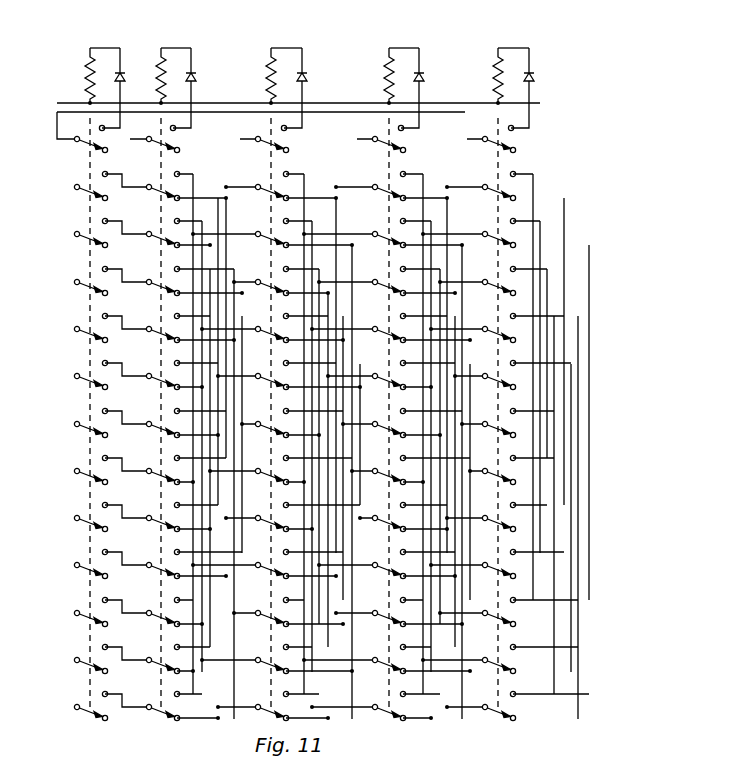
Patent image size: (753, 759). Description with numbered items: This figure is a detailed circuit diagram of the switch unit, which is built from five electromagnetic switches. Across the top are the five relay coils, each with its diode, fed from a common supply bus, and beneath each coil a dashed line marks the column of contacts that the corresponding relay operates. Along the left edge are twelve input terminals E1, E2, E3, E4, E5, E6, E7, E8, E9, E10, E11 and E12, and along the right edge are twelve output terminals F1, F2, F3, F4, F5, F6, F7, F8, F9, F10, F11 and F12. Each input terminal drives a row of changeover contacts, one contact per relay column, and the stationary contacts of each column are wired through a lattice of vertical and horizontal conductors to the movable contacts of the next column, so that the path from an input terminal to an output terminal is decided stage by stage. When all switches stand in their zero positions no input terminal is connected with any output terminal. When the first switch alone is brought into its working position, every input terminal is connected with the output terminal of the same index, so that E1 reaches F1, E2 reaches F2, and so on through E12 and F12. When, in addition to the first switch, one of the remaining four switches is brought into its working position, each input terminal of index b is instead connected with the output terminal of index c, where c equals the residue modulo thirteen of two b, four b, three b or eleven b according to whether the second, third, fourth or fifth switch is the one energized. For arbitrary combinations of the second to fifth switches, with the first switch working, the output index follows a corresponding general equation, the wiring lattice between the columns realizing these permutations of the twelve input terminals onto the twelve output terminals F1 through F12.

The input terminal E1 is at (74, 187).
The input terminal E2 is at (74, 234).
The input terminal E3 is at (74, 282).
The input terminal E4 is at (74, 329).
The input terminal E5 is at (74, 376).
The input terminal E6 is at (74, 424).
The input terminal E7 is at (74, 471).
The input terminal E8 is at (74, 518).
The input terminal E9 is at (74, 565).
The input terminal E10 is at (74, 613).
The input terminal E11 is at (74, 660).
The input terminal E12 is at (74, 707).
The output terminal F1 is at (513, 198).
The output terminal F2 is at (513, 245).
The output terminal F3 is at (513, 293).
The output terminal F4 is at (513, 340).
The output terminal F5 is at (513, 387).
The output terminal F6 is at (513, 435).
The output terminal F7 is at (513, 482).
The output terminal F8 is at (513, 529).
The output terminal F9 is at (513, 576).
The output terminal F10 is at (513, 624).
The output terminal F11 is at (513, 671).
The output terminal F12 is at (513, 718).